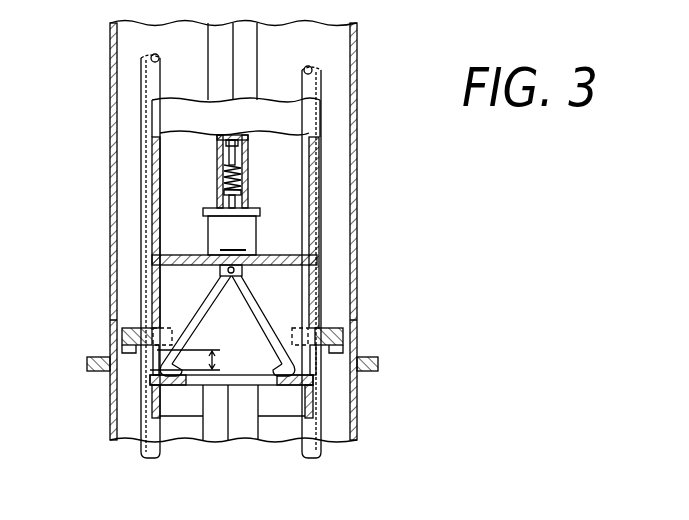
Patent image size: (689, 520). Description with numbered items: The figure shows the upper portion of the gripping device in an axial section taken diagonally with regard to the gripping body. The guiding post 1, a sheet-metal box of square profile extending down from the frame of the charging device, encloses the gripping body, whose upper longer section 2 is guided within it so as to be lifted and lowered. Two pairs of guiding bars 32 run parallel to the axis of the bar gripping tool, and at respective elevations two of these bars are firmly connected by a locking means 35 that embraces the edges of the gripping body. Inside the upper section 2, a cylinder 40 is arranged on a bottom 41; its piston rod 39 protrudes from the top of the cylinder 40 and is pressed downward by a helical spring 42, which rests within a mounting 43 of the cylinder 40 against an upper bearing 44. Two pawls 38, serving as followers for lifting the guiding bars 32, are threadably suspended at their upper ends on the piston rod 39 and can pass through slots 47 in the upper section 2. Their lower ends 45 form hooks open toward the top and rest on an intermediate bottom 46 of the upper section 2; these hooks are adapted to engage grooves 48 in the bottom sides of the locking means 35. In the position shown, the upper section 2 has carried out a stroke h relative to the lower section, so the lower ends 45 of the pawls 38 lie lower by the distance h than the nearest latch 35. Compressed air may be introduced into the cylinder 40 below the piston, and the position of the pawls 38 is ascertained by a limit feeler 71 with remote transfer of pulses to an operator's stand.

The guiding post 1 is at (112, 45).
The upper section of the gripping body 2 is at (152, 206).
The guiding bars 32 is at (140, 440).
The locking means 35 is at (130, 323).
The pawls 38 is at (207, 312).
The piston rod 39 is at (218, 200).
The cylinder 40 is at (231, 232).
The bottom 41 is at (285, 255).
The helical spring 42 is at (248, 182).
The mounting 43 is at (248, 145).
The upper bearing 44 is at (224, 152).
The lower ends of the pawls 45 is at (280, 352).
The intermediate bottom 46 is at (284, 386).
The slots 47 is at (155, 318).
The grooves 48 is at (133, 352).
The limit feeler 71 is at (240, 135).
The stroke h is at (223, 353).